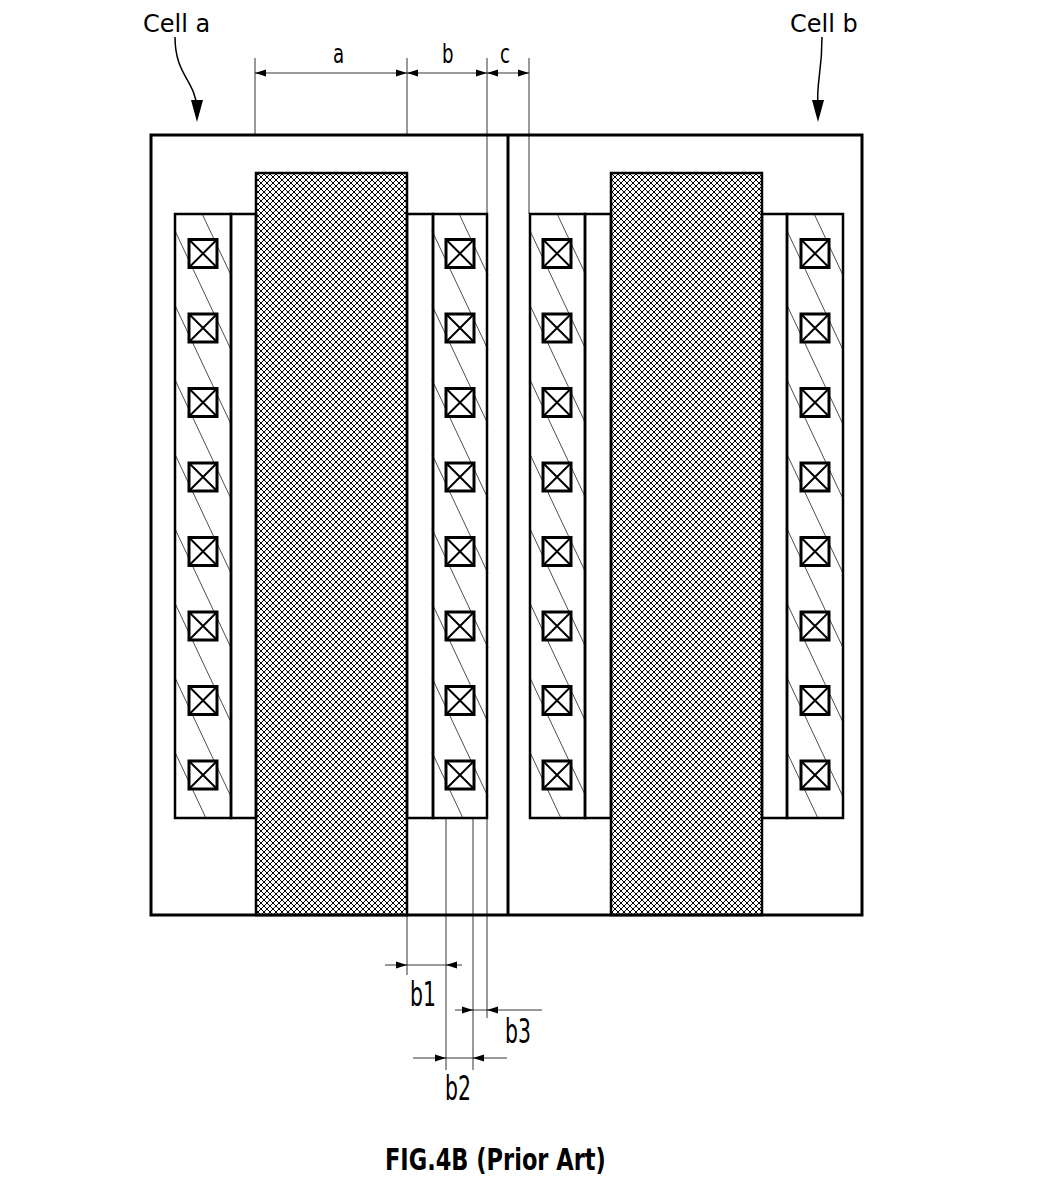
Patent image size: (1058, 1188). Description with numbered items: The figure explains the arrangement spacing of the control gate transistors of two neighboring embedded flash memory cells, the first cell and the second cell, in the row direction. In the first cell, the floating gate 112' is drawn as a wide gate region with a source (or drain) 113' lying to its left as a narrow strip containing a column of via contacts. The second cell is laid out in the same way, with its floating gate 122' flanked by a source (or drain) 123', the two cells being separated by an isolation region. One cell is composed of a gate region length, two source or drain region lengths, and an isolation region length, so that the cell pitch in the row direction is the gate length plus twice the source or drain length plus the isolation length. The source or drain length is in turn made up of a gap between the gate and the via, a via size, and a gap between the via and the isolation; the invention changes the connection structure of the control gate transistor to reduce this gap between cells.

The floating gate 112' is at (227, 544).
The source (or drain) 113' is at (152, 516).
The floating gate 122' is at (786, 544).
The source (or drain) 123' is at (745, 516).